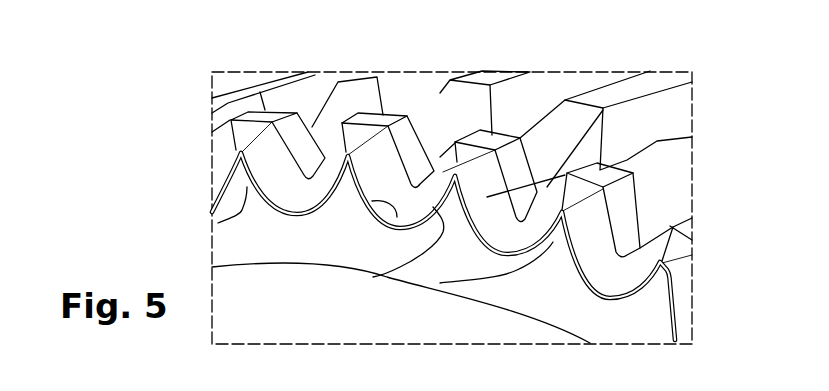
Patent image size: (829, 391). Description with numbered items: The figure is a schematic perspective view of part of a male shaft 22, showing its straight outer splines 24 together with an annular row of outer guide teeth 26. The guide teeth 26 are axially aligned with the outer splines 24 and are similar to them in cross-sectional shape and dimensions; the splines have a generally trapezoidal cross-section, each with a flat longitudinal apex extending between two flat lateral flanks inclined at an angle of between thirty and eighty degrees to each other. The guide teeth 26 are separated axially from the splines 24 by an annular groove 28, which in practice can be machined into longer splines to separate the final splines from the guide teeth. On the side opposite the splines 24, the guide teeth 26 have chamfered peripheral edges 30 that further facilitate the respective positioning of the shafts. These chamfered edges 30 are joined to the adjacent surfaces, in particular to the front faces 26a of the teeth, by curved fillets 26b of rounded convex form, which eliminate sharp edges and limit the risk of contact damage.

The male shaft 22 is at (525, 42).
The outer splines 24 is at (439, 112).
The outer guide teeth 26 is at (347, 198).
The front faces 26a is at (457, 210).
The curved fillets 26b is at (397, 217).
The annular groove 28 is at (661, 178).
The chamfered peripheral edges 30 is at (548, 188).